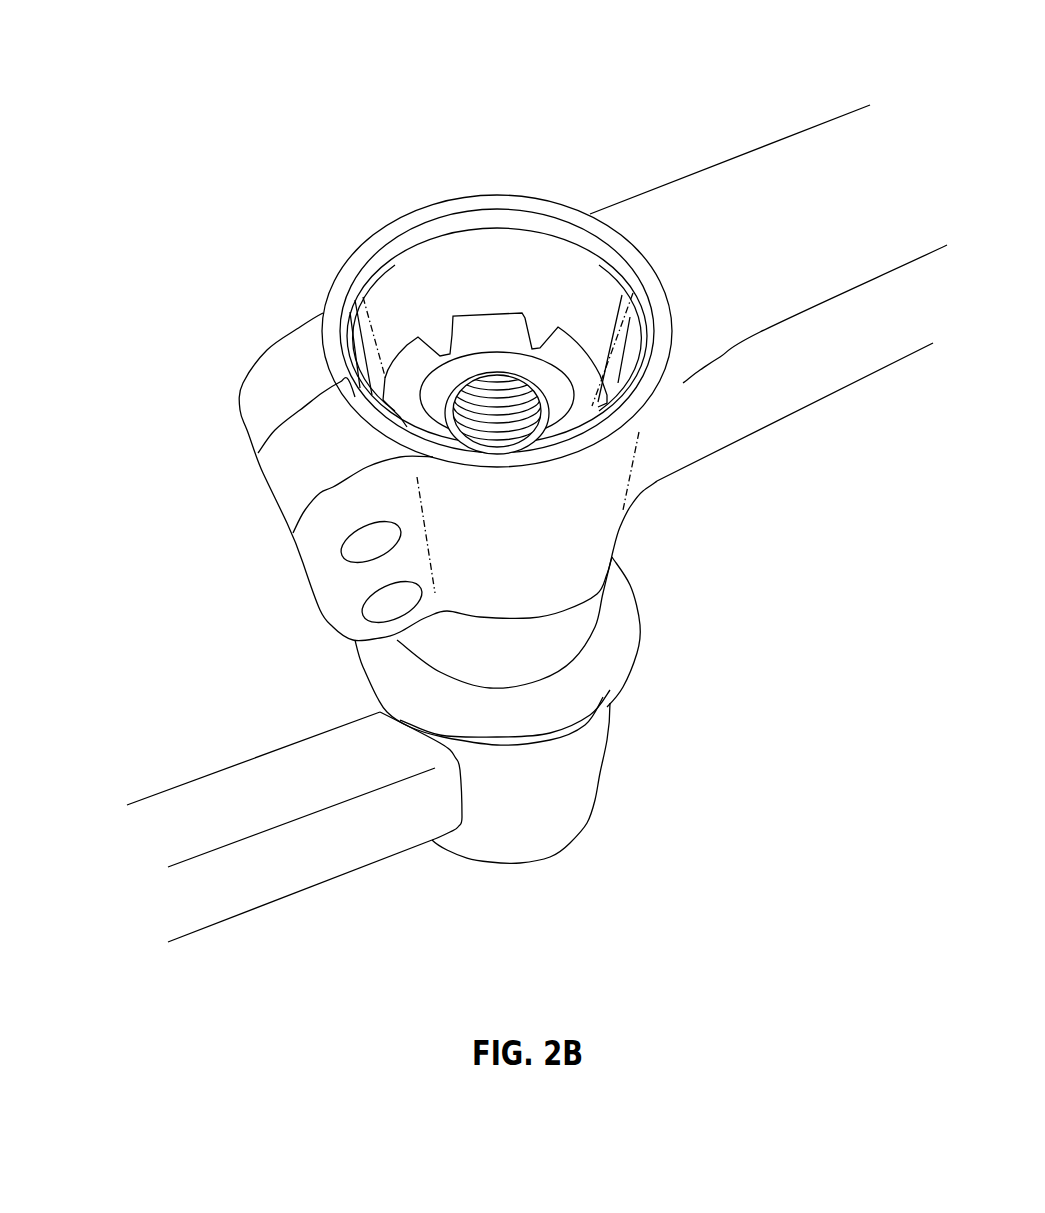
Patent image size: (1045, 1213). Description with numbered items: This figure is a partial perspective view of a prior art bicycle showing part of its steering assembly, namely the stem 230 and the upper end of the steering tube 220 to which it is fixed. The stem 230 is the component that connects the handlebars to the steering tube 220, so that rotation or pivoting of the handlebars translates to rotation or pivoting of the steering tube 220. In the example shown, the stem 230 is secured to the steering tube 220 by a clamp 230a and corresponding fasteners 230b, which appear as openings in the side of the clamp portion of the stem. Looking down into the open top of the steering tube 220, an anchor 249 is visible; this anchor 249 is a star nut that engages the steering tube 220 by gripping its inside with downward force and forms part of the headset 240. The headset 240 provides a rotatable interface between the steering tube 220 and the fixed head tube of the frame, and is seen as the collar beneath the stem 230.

The steering tube 220 is at (415, 288).
The anchor 249 is at (495, 333).
The stem 230 is at (753, 195).
The clamp 230a is at (295, 488).
The fasteners 230b is at (343, 547).
The headset 240 is at (605, 645).